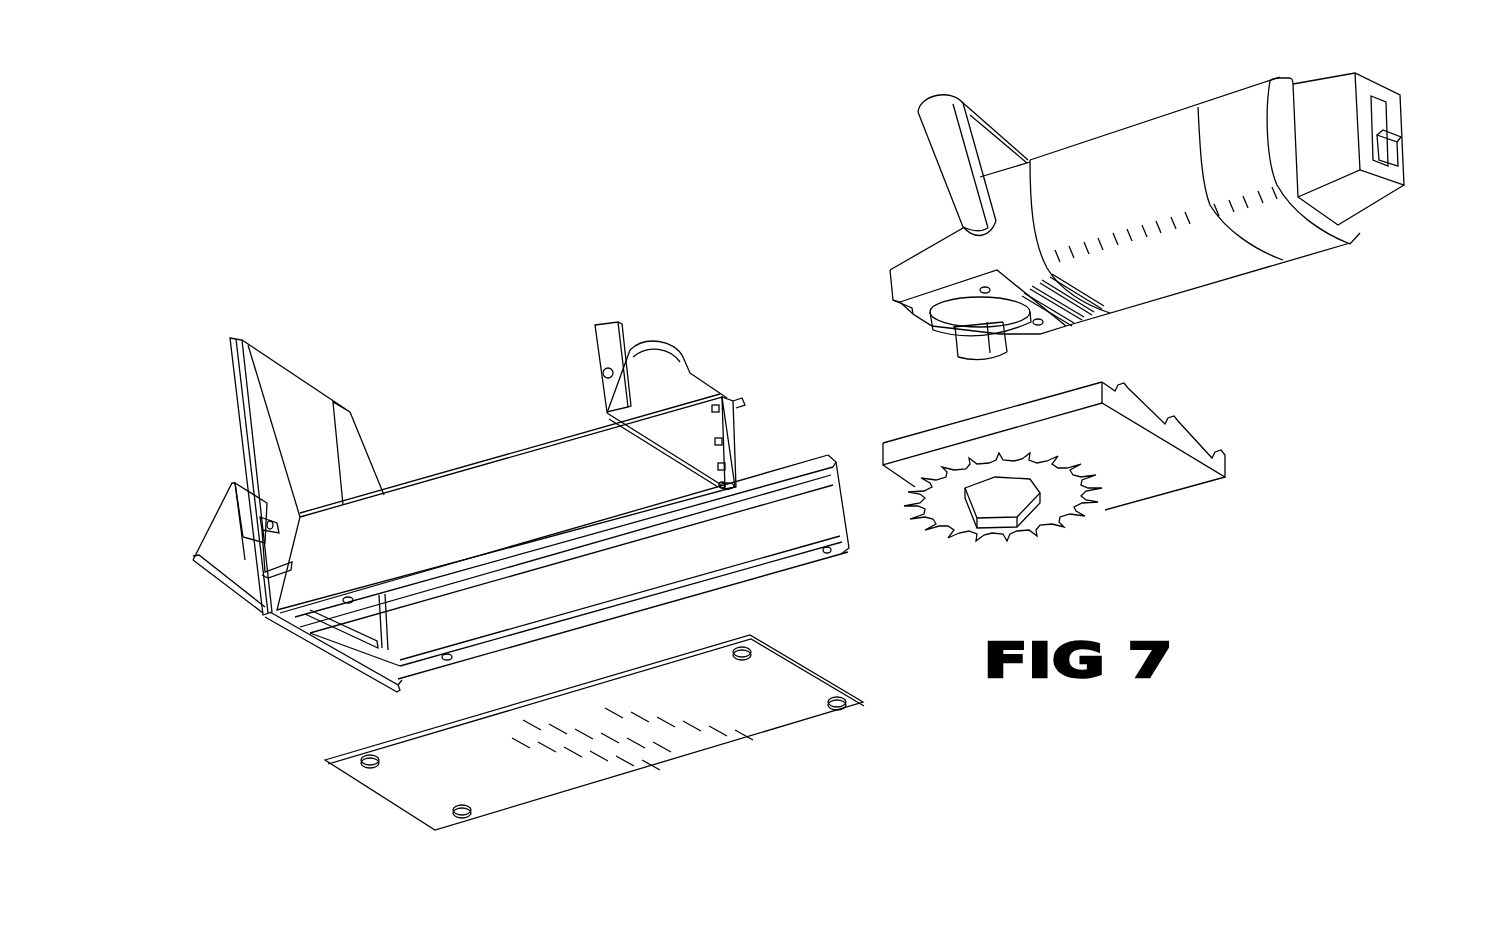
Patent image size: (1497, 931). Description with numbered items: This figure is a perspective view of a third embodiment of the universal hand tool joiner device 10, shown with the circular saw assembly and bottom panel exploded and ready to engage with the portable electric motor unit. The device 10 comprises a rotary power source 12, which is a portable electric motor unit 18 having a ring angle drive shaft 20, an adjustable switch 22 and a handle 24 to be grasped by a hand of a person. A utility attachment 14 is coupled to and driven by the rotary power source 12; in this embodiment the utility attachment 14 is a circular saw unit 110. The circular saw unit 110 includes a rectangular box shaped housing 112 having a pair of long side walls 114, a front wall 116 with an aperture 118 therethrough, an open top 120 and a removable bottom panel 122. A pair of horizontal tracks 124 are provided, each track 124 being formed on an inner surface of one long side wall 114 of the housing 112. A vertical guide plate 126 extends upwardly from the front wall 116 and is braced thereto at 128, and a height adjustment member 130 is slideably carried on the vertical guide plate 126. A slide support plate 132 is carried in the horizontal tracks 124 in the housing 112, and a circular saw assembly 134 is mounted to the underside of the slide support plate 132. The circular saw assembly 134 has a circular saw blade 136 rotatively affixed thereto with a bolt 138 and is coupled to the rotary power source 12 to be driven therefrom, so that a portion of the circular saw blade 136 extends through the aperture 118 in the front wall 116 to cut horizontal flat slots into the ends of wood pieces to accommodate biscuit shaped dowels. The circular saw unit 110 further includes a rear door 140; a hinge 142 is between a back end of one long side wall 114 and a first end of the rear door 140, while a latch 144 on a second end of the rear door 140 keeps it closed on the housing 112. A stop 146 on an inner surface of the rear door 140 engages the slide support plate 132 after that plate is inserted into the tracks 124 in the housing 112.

The universal hand tool joiner device 10 is at (650, 173).
The rotary power source 12 is at (1154, 110).
The utility attachment 14 is at (496, 446).
The portable electric motor unit 18 is at (1048, 157).
The ring angle drive shaft 20 is at (960, 330).
The adjustable switch 22 is at (1400, 146).
The handle 24 is at (933, 118).
The circular saw unit 110 is at (405, 470).
The rectangular box shaped housing 112 is at (843, 558).
The long side wall 114 is at (558, 508).
The front wall 116 is at (265, 612).
The aperture 118 is at (391, 634).
The open top 120 is at (458, 440).
The removable bottom panel 122 is at (786, 714).
The horizontal track 124 is at (740, 415).
The vertical guide plate 126 is at (232, 370).
The brace 128 is at (343, 408).
The height adjustment member 130 is at (224, 515).
The slide support plate 132 is at (1227, 463).
The circular saw assembly 134 is at (1120, 494).
The circular saw blade 136 is at (1070, 504).
The bolt 138 is at (976, 506).
The rear door 140 is at (698, 398).
The hinge 142 is at (720, 485).
The latch 144 is at (606, 328).
The stop 146 is at (682, 348).